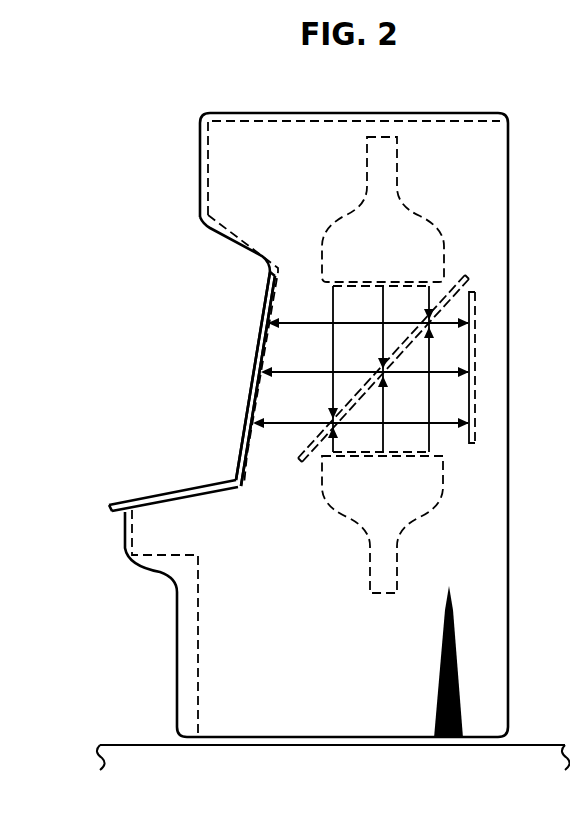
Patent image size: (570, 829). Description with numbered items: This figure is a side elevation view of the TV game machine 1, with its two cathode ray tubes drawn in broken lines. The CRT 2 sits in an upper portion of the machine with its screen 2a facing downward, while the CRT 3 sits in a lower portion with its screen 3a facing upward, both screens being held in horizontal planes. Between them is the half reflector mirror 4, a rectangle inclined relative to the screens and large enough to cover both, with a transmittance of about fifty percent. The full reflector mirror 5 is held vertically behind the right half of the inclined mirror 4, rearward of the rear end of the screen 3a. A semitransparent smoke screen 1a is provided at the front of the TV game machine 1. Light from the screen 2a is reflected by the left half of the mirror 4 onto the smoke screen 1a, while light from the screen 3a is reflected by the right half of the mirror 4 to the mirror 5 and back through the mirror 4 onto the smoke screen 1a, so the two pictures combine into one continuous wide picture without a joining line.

The TV game machine 1 is at (508, 172).
The smoke screen 1a is at (250, 388).
The CRT 2 is at (398, 193).
The screen 2a is at (348, 288).
The CRT 3 is at (356, 532).
The screen 3a is at (396, 452).
The half reflector mirror 4 is at (300, 446).
The full reflector mirror 5 is at (477, 364).